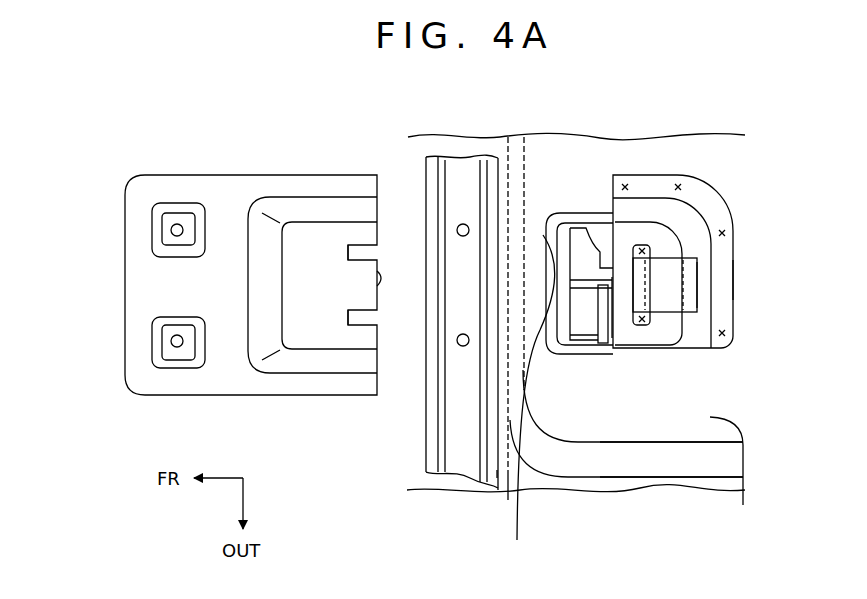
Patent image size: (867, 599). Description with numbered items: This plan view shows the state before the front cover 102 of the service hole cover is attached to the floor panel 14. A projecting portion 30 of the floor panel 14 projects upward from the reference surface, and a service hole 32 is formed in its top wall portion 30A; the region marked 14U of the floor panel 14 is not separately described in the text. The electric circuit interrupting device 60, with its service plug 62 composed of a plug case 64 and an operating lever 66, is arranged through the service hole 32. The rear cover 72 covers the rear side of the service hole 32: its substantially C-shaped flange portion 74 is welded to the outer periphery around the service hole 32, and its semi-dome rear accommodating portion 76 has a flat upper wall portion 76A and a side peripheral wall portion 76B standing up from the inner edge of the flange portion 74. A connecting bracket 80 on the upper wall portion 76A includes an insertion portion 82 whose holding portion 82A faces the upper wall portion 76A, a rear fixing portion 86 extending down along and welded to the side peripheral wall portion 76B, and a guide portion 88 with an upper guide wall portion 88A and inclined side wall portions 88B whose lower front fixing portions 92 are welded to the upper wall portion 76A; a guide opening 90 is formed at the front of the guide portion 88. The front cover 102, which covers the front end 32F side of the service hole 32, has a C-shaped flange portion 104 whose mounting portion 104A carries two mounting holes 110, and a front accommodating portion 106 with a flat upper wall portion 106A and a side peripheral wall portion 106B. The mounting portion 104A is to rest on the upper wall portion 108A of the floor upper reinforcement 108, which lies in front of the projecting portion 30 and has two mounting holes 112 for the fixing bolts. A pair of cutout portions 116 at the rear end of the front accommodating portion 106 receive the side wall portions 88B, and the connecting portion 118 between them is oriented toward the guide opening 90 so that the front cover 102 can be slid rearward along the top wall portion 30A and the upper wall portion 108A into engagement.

The front cover 102 is at (223, 124).
The flange portion 104 is at (252, 172).
The mounting portion 104A is at (146, 183).
The front accommodating portion 106 is at (390, 104).
The upper wall portion 106A is at (320, 237).
The side peripheral wall portion 106B is at (302, 210).
The floor upper reinforcement 108 is at (421, 459).
The upper wall portion 108A is at (457, 432).
The mounting holes 110 is at (190, 229).
The mounting holes 112 is at (466, 226).
The cutout portions 116 is at (385, 248).
The connecting portion 118 is at (410, 287).
The floor panel 14 is at (583, 497).
The panel upper surface 14U is at (660, 490).
The projecting portion 30 is at (701, 466).
The top wall portion 30A is at (743, 505).
The service hole 32 is at (523, 385).
The front end 32F is at (508, 500).
The electric circuit interrupting device 60 is at (555, 246).
The service plug 62 is at (602, 91).
The plug case 64 is at (598, 228).
The operating lever 66 is at (575, 212).
The rear cover 72 is at (704, 288).
The flange portion 74 is at (728, 372).
The rear accommodating portion 76 is at (812, 290).
The upper wall portion 76A is at (742, 289).
The side peripheral wall portion 76B is at (700, 340).
The connecting bracket 80 is at (681, 277).
The insertion portion 82 is at (712, 252).
The holding portion 82A is at (690, 258).
The rear fixing portion 86 is at (703, 263).
The guide portion 88 is at (636, 322).
The upper guide wall portion 88A is at (640, 244).
The side wall portions 88B is at (645, 248).
The guide opening 90 is at (553, 322).
The front fixing portion 92 is at (654, 262).